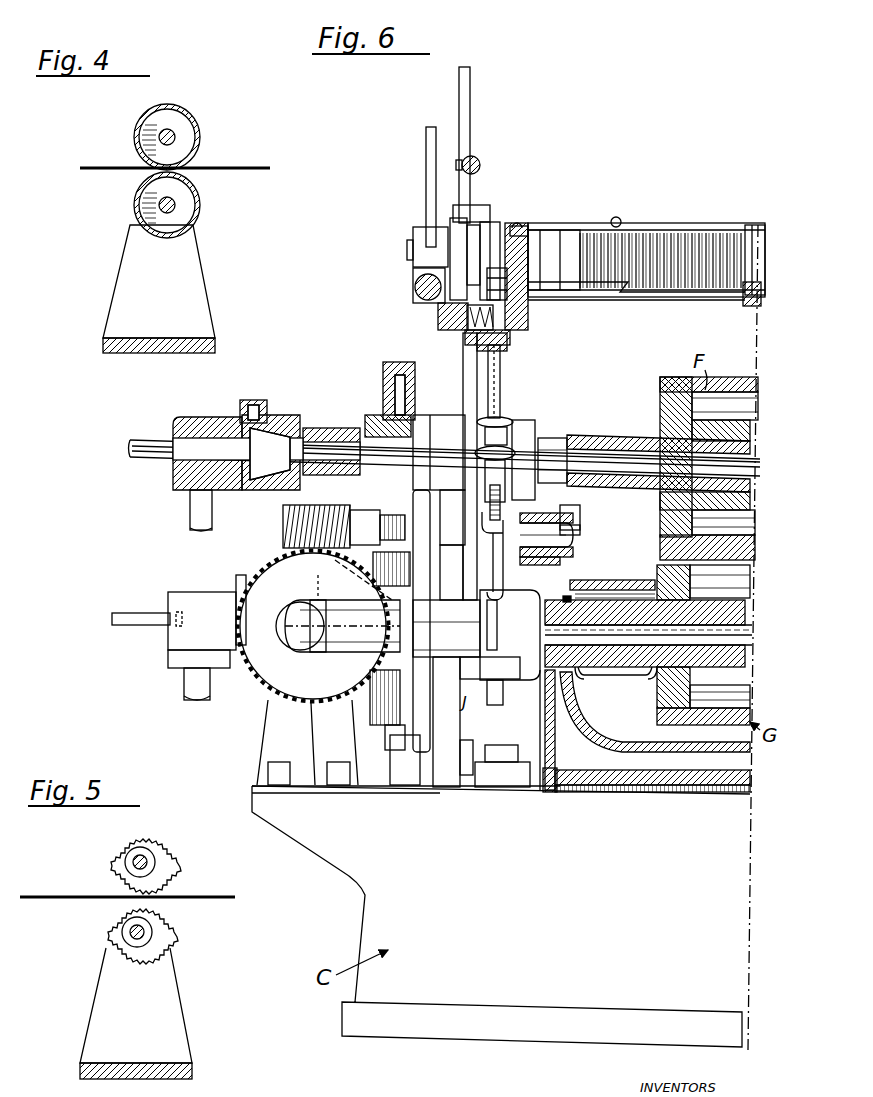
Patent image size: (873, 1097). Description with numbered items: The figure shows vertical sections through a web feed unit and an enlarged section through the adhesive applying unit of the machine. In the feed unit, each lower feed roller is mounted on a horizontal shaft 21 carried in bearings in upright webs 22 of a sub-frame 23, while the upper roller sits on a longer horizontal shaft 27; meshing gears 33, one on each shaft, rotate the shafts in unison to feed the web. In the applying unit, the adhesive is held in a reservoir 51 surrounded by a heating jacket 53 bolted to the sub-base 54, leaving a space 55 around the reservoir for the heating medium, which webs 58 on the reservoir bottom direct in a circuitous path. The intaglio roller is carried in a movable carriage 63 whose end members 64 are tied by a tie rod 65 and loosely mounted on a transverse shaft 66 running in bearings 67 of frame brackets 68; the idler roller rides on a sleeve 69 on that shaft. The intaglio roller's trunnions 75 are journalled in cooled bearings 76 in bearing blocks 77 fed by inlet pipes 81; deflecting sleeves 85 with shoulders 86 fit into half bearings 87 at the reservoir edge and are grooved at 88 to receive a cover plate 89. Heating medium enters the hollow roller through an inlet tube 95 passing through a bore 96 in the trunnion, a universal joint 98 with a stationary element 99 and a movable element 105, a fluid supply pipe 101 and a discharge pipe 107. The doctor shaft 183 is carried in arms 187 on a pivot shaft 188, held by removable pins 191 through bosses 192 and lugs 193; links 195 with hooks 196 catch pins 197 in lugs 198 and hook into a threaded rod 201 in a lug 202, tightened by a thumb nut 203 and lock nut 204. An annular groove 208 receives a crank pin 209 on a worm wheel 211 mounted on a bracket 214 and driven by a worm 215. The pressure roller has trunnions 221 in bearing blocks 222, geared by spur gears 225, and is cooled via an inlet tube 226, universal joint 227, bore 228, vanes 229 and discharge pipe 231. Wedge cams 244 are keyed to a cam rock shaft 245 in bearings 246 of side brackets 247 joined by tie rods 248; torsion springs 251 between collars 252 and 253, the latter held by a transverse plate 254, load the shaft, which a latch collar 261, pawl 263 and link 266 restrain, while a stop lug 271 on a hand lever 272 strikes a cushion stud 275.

In FIG. 4, the horizontal shaft 21 is at (172, 205).
In FIG. 5, the horizontal shaft 21 is at (148, 935).
In FIG. 4, the upright webs 22 is at (196, 256).
In FIG. 5, the upright webs 22 is at (173, 985).
In FIG. 4, the sub-frame 23 is at (195, 290).
In FIG. 5, the sub-frame 23 is at (183, 1025).
In FIG. 4, the horizontal shaft 27 is at (170, 137).
In FIG. 5, the horizontal shaft 27 is at (148, 858).
In FIG. 5, the meshing gears 33 is at (168, 870).
In FIG. 6, the pawl 263 is at (471, 100).
In FIG. 6, the hand lever 272 is at (426, 138).
In FIG. 6, the link 266 is at (478, 160).
In FIG. 6, the latch collar 261 is at (445, 240).
In FIG. 6, the stop lug 271 is at (414, 287).
In FIG. 6, the cushion stud 275 is at (487, 280).
In FIG. 6, the wedge cams 244 is at (512, 222).
In FIG. 6, the side brackets 247 is at (512, 322).
In FIG. 6, the transverse plate 254 is at (645, 224).
In FIG. 6, the bearings 246 is at (548, 228).
In FIG. 6, the collar 252 is at (600, 222).
In FIG. 6, the torsion springs 251 is at (680, 250).
In FIG. 6, the tie rods 248 is at (640, 296).
In FIG. 6, the cam rock shaft 245 is at (765, 270).
In FIG. 6, the collar 253 is at (752, 306).
In FIG. 6, the movable carriage 63 is at (462, 360).
In FIG. 6, the end members 64 is at (500, 400).
In FIG. 6, the lock nut 204 is at (504, 416).
In FIG. 6, the thumb nut 203 is at (510, 452).
In FIG. 6, the lug 202 is at (550, 438).
In FIG. 6, the bearing block 222 is at (474, 583).
In FIG. 6, the bearings 67 is at (450, 492).
In FIG. 6, the spur gears 225 is at (395, 362).
In FIG. 6, the bore 228 is at (340, 430).
In FIG. 6, the inlet tube 226 is at (150, 440).
In FIG. 6, the universal joint 227 is at (244, 422).
In FIG. 6, the discharge pipe 231 is at (190, 512).
In FIG. 6, the worm 215 is at (290, 535).
In FIG. 6, the transverse shaft 66 is at (283, 520).
In FIG. 6, the threaded rod 201 is at (578, 520).
In FIG. 6, the sleeve 69 is at (575, 538).
In FIG. 6, the trunnions 221 is at (600, 436).
In FIG. 6, the tie rod 65 is at (662, 505).
In FIG. 6, the helically curved vanes 229 is at (725, 406).
In FIG. 6, the worm wheel 211 is at (270, 676).
In FIG. 6, the doctor shaft 183 is at (338, 626).
In FIG. 6, the annular groove 208 is at (320, 652).
In FIG. 6, the crank pin 209 is at (318, 600).
In FIG. 6, the removable pins 191 is at (373, 560).
In FIG. 6, the bosses 192 is at (380, 575).
In FIG. 6, the lugs 193 is at (449, 572).
In FIG. 6, the movable element 105 is at (250, 572).
In FIG. 6, the universal joint 98 is at (222, 590).
In FIG. 6, the stationary element 99 is at (199, 636).
In FIG. 6, the fluid supply pipe 101 is at (124, 614).
In FIG. 6, the discharge pipe 107 is at (184, 684).
In FIG. 6, the bracket 214 is at (275, 733).
In FIG. 6, the arms 187 is at (390, 730).
In FIG. 6, the pivot shaft 188 is at (395, 775).
In FIG. 6, the frame brackets 68 is at (447, 786).
In FIG. 6, the pin 197 is at (446, 628).
In FIG. 6, the lug 198 is at (487, 656).
In FIG. 6, the bearings 76 is at (510, 635).
In FIG. 6, the bearing blocks 77 is at (503, 586).
In FIG. 6, the hook 196 is at (506, 625).
In FIG. 6, the links 195 is at (540, 570).
In FIG. 6, the inlet pipes 81 is at (495, 705).
In FIG. 6, the half bearings 87 is at (556, 688).
In FIG. 6, the trunnions 75 is at (625, 614).
In FIG. 6, the inlet tube 95 is at (714, 628).
In FIG. 6, the bore 96 is at (754, 640).
In FIG. 6, the cover plate 89 is at (612, 578).
In FIG. 6, the grooves 88 is at (570, 595).
In FIG. 6, the deflecting sleeves 85 is at (615, 668).
In FIG. 6, the adhesive deflecting shoulders 86 is at (582, 675).
In FIG. 6, the reservoir 51 is at (623, 742).
In FIG. 6, the heating jacket 53 is at (650, 778).
In FIG. 6, the webs 58 is at (618, 788).
In FIG. 6, the space 55 is at (572, 782).
In FIG. 6, the sub-base 54 is at (501, 916).